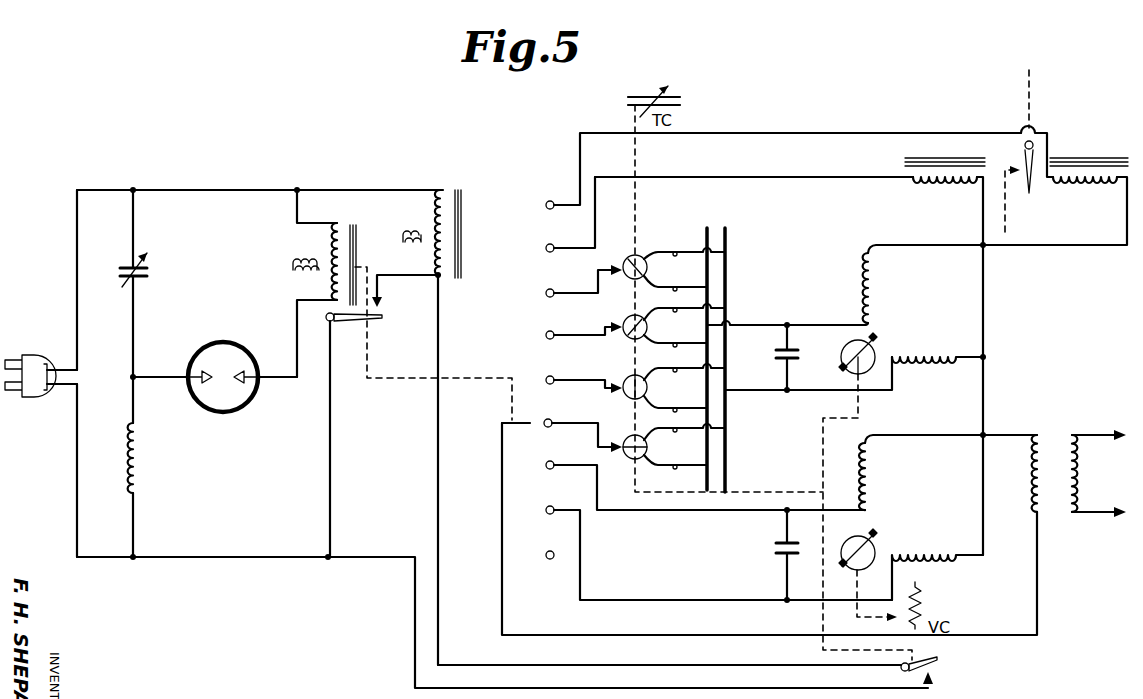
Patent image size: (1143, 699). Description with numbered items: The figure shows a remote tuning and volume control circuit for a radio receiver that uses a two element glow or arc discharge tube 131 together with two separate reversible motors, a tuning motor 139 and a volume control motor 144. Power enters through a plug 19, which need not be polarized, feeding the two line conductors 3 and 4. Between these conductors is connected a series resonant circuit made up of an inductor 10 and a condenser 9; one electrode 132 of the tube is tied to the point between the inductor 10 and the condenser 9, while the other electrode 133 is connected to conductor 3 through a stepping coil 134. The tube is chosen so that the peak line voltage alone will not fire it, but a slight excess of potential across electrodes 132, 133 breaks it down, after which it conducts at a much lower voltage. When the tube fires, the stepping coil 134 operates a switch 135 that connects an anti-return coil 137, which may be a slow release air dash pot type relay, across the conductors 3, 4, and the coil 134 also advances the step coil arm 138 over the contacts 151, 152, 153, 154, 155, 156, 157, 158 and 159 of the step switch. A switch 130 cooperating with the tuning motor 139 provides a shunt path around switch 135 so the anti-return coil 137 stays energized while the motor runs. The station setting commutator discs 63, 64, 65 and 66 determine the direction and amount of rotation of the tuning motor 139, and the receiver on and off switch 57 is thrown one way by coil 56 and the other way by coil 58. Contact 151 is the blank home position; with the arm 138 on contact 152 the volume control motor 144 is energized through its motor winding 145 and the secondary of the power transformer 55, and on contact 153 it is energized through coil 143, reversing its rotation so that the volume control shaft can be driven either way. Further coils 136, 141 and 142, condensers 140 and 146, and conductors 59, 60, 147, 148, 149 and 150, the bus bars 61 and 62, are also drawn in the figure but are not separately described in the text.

The conductor 3 is at (202, 192).
The conductor 4 is at (215, 557).
The condenser 9 is at (148, 276).
The inductor 10 is at (144, 464).
The plug 19 is at (34, 400).
The two element glow or arc discharge tube 131 is at (222, 342).
The electrode 132 is at (196, 396).
The electrode 133 is at (240, 398).
The stepping coil 134 is at (342, 226).
The switch 135 is at (383, 310).
The auxiliary winding 136 is at (408, 243).
The anti-return coil 137 is at (447, 190).
The step coil arm 138 is at (540, 423).
The tuning motor 139 is at (875, 344).
The capacitor 140 is at (776, 351).
The coil 141 is at (873, 270).
The coil 142 is at (918, 368).
The coil 143 is at (870, 465).
The volume control motor 144 is at (864, 542).
The motor winding 145 is at (926, 572).
The capacitor 146 is at (762, 549).
The conductor 147 is at (646, 516).
The conductor 148 is at (626, 604).
The conductor 149 is at (810, 404).
The conductor 150 is at (792, 319).
The contact point 151 is at (547, 559).
The contact point 152 is at (546, 506).
The contact point 153 is at (546, 461).
The contact 154 is at (551, 419).
The contact 155 is at (546, 376).
The contact 156 is at (546, 331).
The contact 157 is at (546, 289).
The contact 158 is at (546, 244).
The contact 159 is at (546, 200).
The power transformer 55 is at (1052, 434).
The coil 56 is at (935, 208).
The on and off switch 57 is at (1023, 197).
The coil 58 is at (1082, 208).
The conductor 59 is at (812, 134).
The conductor 60 is at (805, 177).
The bus bar 61 is at (700, 234).
The bus bar 62 is at (732, 234).
The station setting commutator disc 63 is at (635, 255).
The station setting commutator disc 64 is at (647, 329).
The station setting commutator disc 65 is at (649, 390).
The station setting commutator disc 66 is at (649, 449).
The switch 130 is at (944, 672).